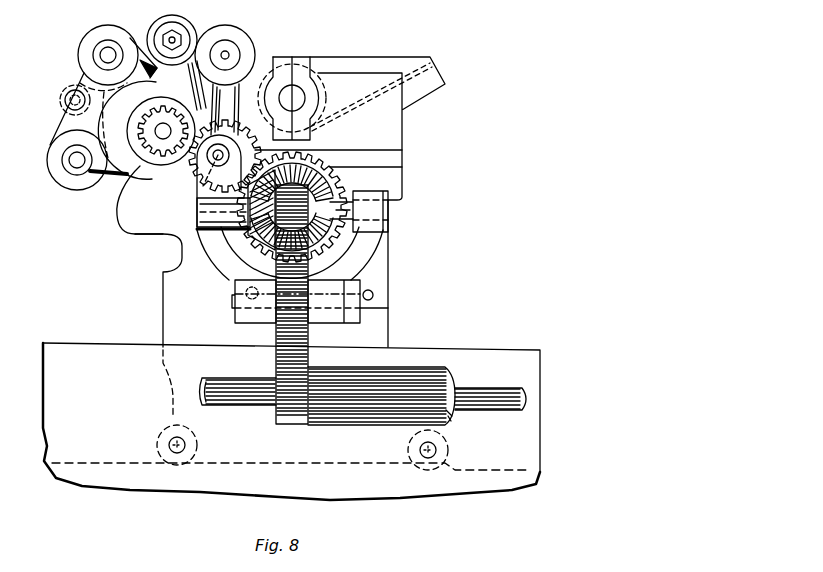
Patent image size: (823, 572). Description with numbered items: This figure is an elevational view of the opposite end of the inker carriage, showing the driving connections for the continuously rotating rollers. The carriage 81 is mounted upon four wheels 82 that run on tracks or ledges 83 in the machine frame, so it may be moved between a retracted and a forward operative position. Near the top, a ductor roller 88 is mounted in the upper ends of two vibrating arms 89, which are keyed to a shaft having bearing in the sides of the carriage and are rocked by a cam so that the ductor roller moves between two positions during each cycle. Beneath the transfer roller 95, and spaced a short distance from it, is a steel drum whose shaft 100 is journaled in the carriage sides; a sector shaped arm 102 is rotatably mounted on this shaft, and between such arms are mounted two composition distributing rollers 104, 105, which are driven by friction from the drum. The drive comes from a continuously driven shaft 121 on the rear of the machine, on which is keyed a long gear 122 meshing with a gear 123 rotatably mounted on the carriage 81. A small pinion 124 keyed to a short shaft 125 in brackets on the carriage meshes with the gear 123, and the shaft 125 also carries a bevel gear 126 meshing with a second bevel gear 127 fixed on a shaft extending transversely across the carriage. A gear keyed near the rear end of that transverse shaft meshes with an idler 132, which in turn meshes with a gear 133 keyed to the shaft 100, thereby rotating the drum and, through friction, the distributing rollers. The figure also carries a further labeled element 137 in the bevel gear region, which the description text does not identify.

The carriage 81 is at (163, 320).
The wheels 82 is at (196, 445).
The tracks or ledges 83 is at (487, 468).
The ductor roller 88 is at (233, 30).
The vibrating arms 89 is at (265, 62).
The transfer roller 95 is at (184, 26).
The shaft 100 is at (133, 181).
The sector shaped arm 102 is at (114, 177).
The composition distributing roller 104 is at (90, 36).
The composition distributing roller 105 is at (60, 175).
The shaft 121 is at (490, 387).
The long gear 122 is at (340, 426).
The gear 123 is at (275, 352).
The small pinion 124 is at (330, 238).
The short shaft 125 is at (338, 196).
The bevel gear 126 is at (222, 262).
The second bevel gear 127 is at (316, 176).
The idler 132 is at (207, 176).
The gear 133 is at (162, 136).
The bevel gear 137 is at (305, 157).